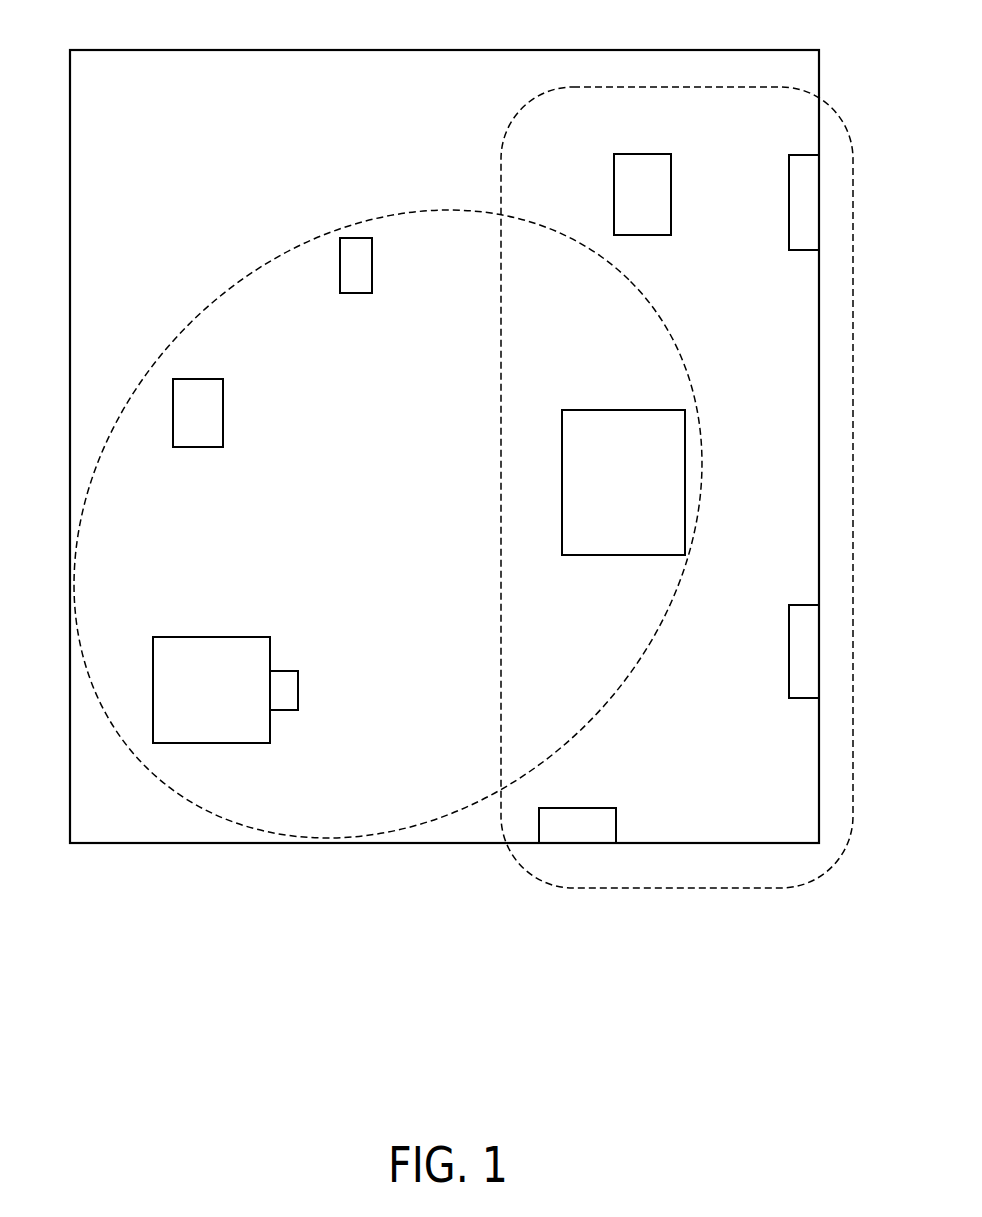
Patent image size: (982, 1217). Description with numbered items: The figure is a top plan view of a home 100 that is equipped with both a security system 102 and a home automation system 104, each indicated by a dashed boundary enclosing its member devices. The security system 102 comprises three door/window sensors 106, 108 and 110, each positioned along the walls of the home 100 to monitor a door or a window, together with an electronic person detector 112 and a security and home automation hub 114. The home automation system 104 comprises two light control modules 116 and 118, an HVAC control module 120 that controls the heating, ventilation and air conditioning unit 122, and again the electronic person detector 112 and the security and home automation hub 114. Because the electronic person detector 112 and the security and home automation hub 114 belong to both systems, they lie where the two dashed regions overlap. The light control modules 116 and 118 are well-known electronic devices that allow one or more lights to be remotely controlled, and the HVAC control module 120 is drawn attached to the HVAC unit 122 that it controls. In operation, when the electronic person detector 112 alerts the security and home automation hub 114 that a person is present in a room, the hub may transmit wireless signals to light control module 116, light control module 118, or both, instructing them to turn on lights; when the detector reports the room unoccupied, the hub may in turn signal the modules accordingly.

The home 100 is at (742, 50).
The security system 102 is at (692, 889).
The home automation system 104 is at (388, 213).
The door/window sensor 106 is at (587, 808).
The door/window sensor 108 is at (789, 645).
The door/window sensor 110 is at (789, 193).
The electronic person detector 112 is at (658, 154).
The security and home automation hub 114 is at (608, 555).
The light control module 116 is at (205, 379).
The light control module 118 is at (354, 293).
The HVAC control module 120 is at (288, 671).
The HVAC unit 122 is at (195, 637).